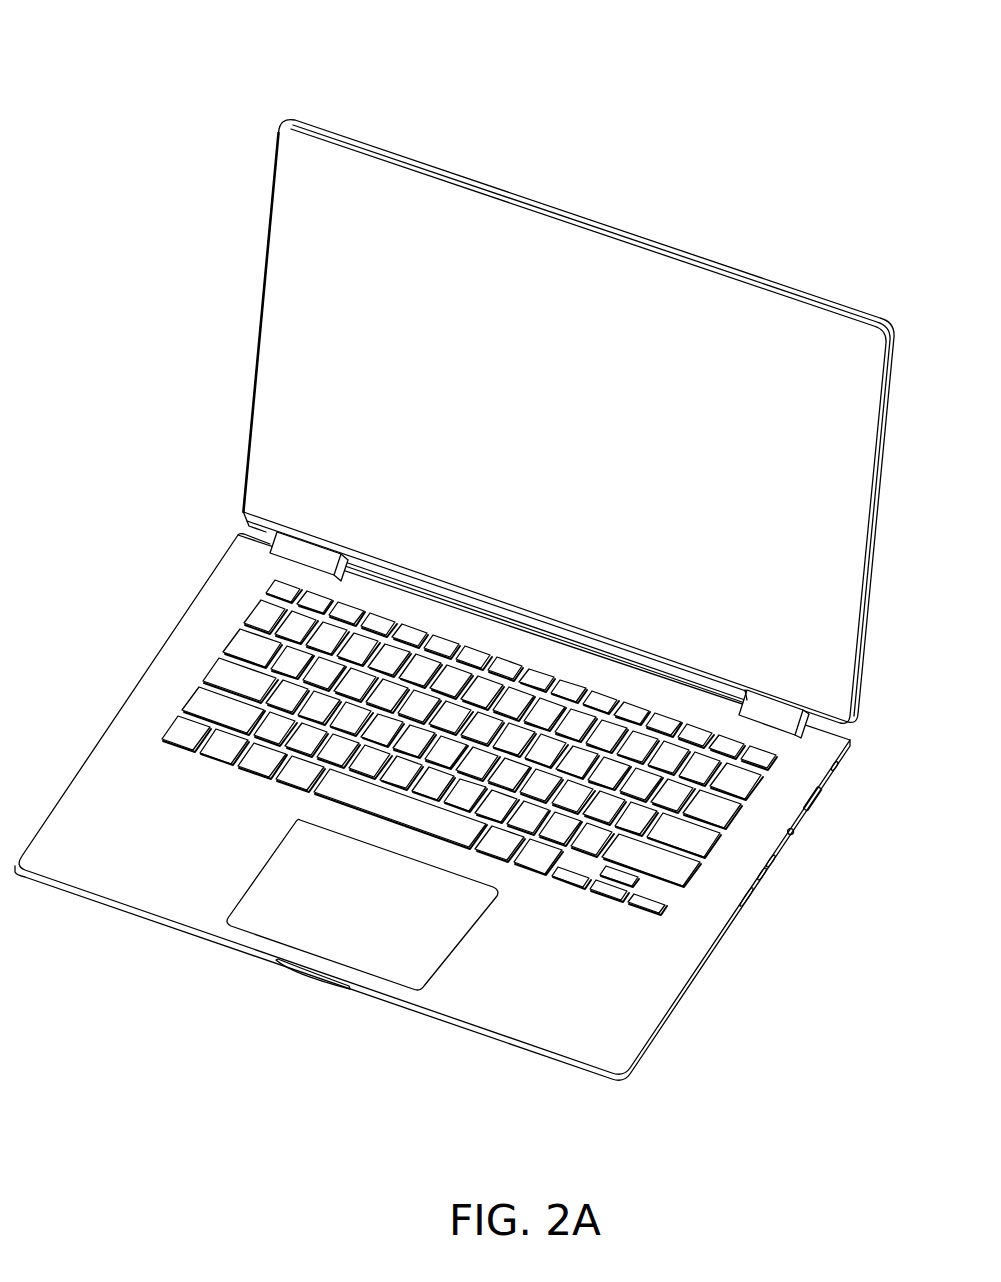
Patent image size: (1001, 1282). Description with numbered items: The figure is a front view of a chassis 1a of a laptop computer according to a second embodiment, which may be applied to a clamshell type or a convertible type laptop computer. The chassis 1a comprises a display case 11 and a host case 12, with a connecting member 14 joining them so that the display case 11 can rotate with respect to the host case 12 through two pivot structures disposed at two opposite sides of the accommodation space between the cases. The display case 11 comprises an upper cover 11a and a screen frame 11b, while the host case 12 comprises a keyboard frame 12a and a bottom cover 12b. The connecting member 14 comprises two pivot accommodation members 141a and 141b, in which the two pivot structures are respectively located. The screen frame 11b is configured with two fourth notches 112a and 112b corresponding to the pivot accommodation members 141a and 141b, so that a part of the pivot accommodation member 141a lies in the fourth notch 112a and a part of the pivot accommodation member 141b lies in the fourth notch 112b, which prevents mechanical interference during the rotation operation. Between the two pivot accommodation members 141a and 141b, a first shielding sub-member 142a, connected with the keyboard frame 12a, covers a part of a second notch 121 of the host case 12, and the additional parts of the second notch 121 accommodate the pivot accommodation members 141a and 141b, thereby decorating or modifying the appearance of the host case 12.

The chassis 1a is at (222, 54).
The display case 11 is at (768, 186).
The upper cover 11a is at (742, 272).
The screen frame 11b is at (692, 283).
The fourth notch 112a is at (268, 530).
The fourth notch 112b is at (737, 686).
The host case 12 is at (857, 893).
The keyboard frame 12a is at (722, 858).
The bottom cover 12b is at (730, 940).
The second notch 121 is at (262, 550).
The connecting member 14 is at (428, 596).
The pivot accommodation member 141a is at (311, 553).
The pivot accommodation member 141b is at (778, 716).
The first shielding sub-member 142a is at (507, 630).